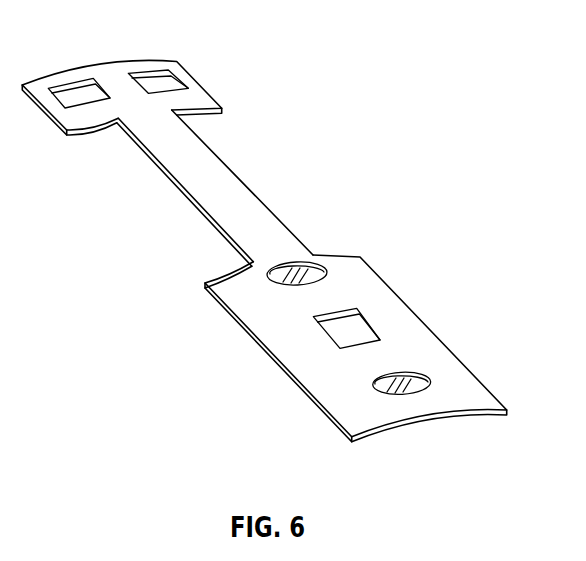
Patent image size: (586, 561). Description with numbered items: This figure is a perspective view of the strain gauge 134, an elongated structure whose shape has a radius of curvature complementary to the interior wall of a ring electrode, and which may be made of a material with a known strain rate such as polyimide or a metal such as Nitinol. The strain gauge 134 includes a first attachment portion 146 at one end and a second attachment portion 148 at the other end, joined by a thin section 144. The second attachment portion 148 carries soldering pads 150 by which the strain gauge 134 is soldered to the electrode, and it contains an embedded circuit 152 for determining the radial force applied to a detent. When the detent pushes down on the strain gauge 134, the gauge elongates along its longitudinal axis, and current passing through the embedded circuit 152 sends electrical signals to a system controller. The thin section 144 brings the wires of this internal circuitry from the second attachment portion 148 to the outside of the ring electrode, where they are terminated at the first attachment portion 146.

The strain gauge 134 is at (271, 238).
The thin section 144 is at (230, 190).
The first attachment portion 146 is at (36, 91).
The second attachment portion 148 is at (266, 353).
The soldering pads 150 is at (309, 268).
The embedded circuit 152 is at (361, 327).